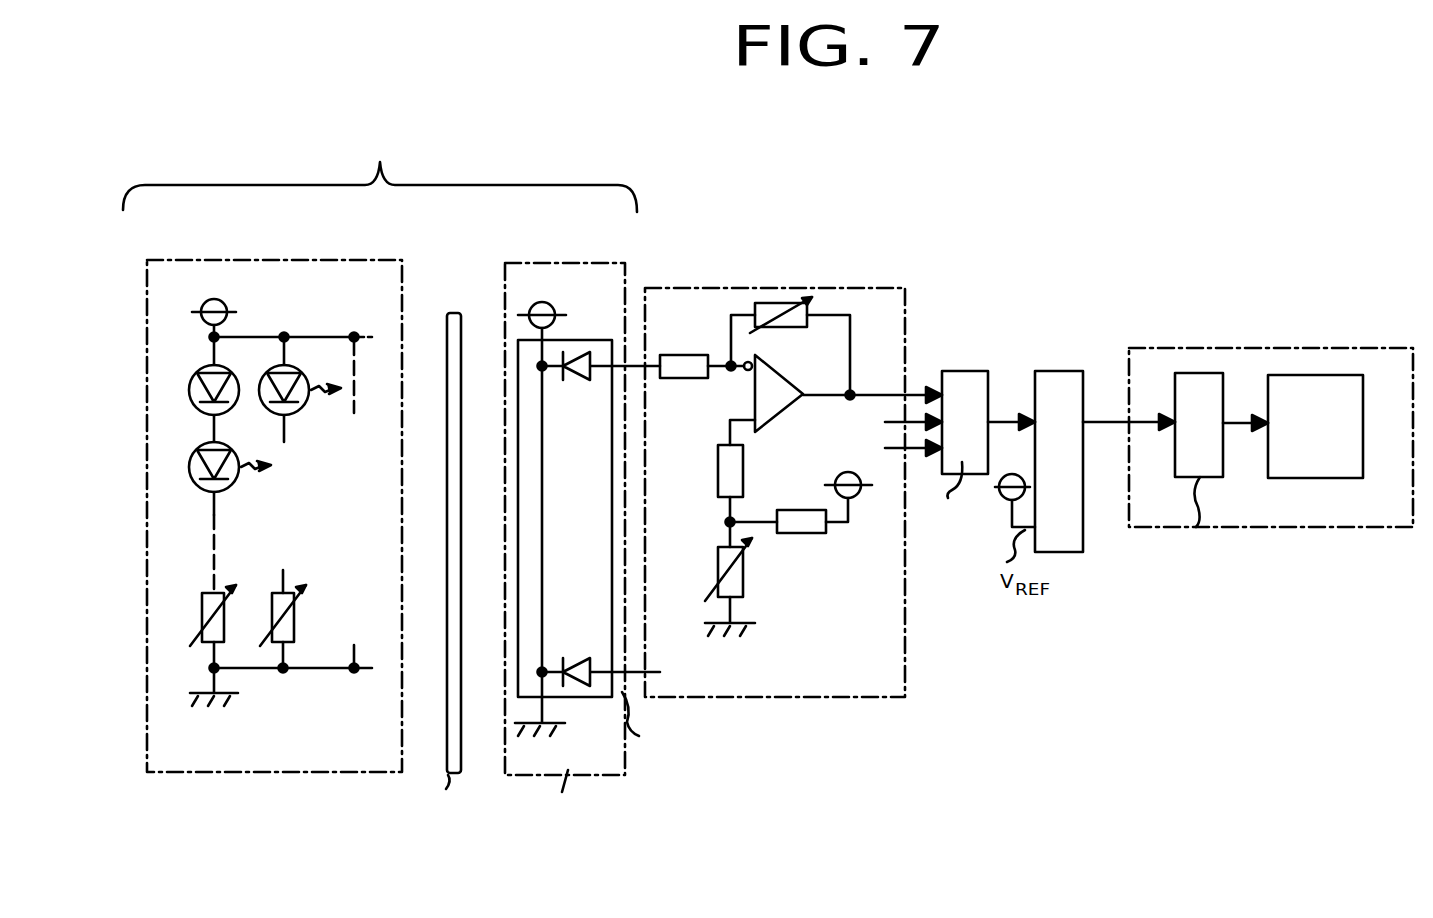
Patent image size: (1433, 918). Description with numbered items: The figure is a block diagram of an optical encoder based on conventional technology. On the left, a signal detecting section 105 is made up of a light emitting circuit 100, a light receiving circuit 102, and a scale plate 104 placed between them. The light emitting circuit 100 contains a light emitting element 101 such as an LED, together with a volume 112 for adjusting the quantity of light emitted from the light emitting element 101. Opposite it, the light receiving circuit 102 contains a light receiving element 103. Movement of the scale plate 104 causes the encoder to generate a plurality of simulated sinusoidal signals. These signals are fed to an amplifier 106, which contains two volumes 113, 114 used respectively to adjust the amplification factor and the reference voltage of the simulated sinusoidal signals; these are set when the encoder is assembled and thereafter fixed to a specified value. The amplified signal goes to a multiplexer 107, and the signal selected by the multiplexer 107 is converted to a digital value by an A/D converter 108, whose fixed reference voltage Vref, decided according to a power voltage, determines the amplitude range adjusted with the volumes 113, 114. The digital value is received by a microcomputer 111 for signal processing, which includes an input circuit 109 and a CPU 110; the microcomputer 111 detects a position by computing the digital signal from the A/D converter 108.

The light emitting circuit 100 is at (196, 259).
The light emitting element 101 is at (197, 365).
The light receiving circuit 102 is at (547, 260).
The light receiving element 103 is at (590, 340).
The scale plate 104 is at (452, 310).
The signal detecting section 105 is at (380, 172).
The amplifier 106 is at (738, 284).
The multiplexer 107 is at (975, 371).
The A/D converter 108 is at (1063, 371).
The input circuit 109 is at (1187, 372).
The CPU 110 is at (1265, 478).
The microcomputer 111 is at (1245, 346).
The volume 112 is at (202, 604).
The volume 113 is at (778, 328).
The volume 114 is at (745, 572).